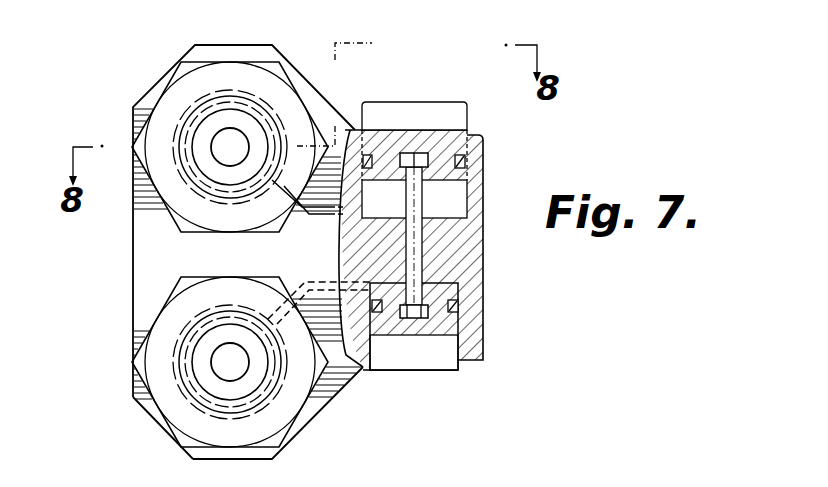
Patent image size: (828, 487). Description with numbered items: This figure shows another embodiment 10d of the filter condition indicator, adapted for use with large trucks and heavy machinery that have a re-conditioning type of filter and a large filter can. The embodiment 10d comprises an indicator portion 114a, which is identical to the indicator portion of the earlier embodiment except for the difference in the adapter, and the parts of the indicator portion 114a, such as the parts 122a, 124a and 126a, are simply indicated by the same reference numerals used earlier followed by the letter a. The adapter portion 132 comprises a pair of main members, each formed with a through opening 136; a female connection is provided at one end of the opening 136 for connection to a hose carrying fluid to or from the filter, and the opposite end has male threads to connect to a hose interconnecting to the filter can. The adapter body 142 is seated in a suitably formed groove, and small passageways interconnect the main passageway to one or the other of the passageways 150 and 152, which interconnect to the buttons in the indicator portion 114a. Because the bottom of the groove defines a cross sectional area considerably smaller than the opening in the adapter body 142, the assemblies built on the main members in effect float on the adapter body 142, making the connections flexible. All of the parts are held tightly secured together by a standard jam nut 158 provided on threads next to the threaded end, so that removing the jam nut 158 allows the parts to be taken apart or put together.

The embodiment 10d is at (160, 70).
The adapter body 142 is at (143, 247).
The adapter portion 132 is at (148, 426).
The through opening 136 is at (245, 134).
The jam nut 158 is at (157, 337).
The passageway 152 is at (327, 220).
The passageway 150 is at (329, 280).
The indicator portion part 122a is at (428, 102).
The indicator portion 114a is at (435, 378).
The indicator portion part 124a is at (418, 258).
The indicator portion part 126a is at (445, 178).